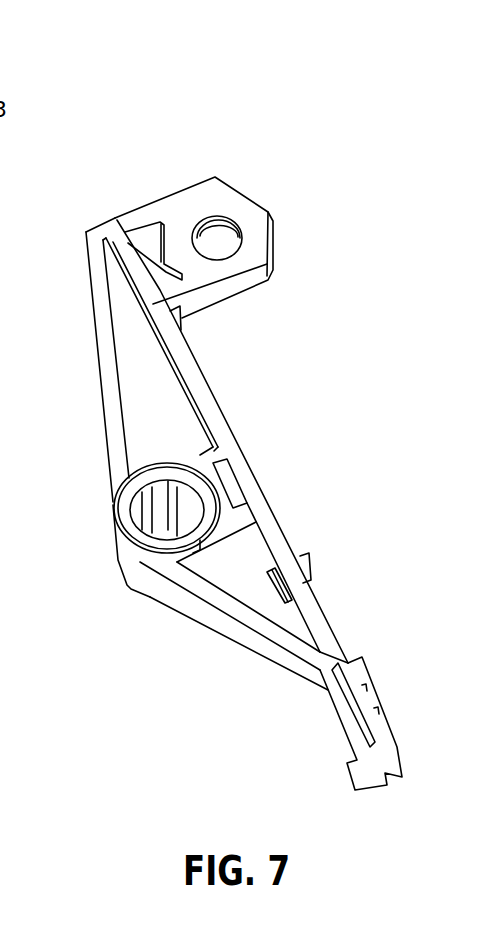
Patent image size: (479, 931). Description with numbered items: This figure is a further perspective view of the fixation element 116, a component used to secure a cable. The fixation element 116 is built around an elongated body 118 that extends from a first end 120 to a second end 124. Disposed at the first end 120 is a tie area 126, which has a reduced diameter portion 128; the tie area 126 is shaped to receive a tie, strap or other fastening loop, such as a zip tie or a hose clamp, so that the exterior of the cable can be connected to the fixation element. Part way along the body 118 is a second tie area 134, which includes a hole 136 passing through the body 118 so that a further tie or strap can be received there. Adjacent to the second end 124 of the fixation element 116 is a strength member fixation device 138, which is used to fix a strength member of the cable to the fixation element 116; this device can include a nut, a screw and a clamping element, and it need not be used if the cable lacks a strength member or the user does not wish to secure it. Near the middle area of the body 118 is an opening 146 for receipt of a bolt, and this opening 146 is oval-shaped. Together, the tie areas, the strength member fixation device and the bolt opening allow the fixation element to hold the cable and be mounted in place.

The fixation element 116 is at (118, 103).
The body 118 is at (98, 353).
The first end 120 is at (333, 713).
The second end 124 is at (102, 225).
The tie area 126 is at (368, 720).
The reduced diameter portion 128 is at (350, 687).
The second tie area 134 is at (290, 575).
The hole 136 is at (273, 580).
The strength member fixation device 138 is at (233, 190).
The opening 146 is at (133, 507).